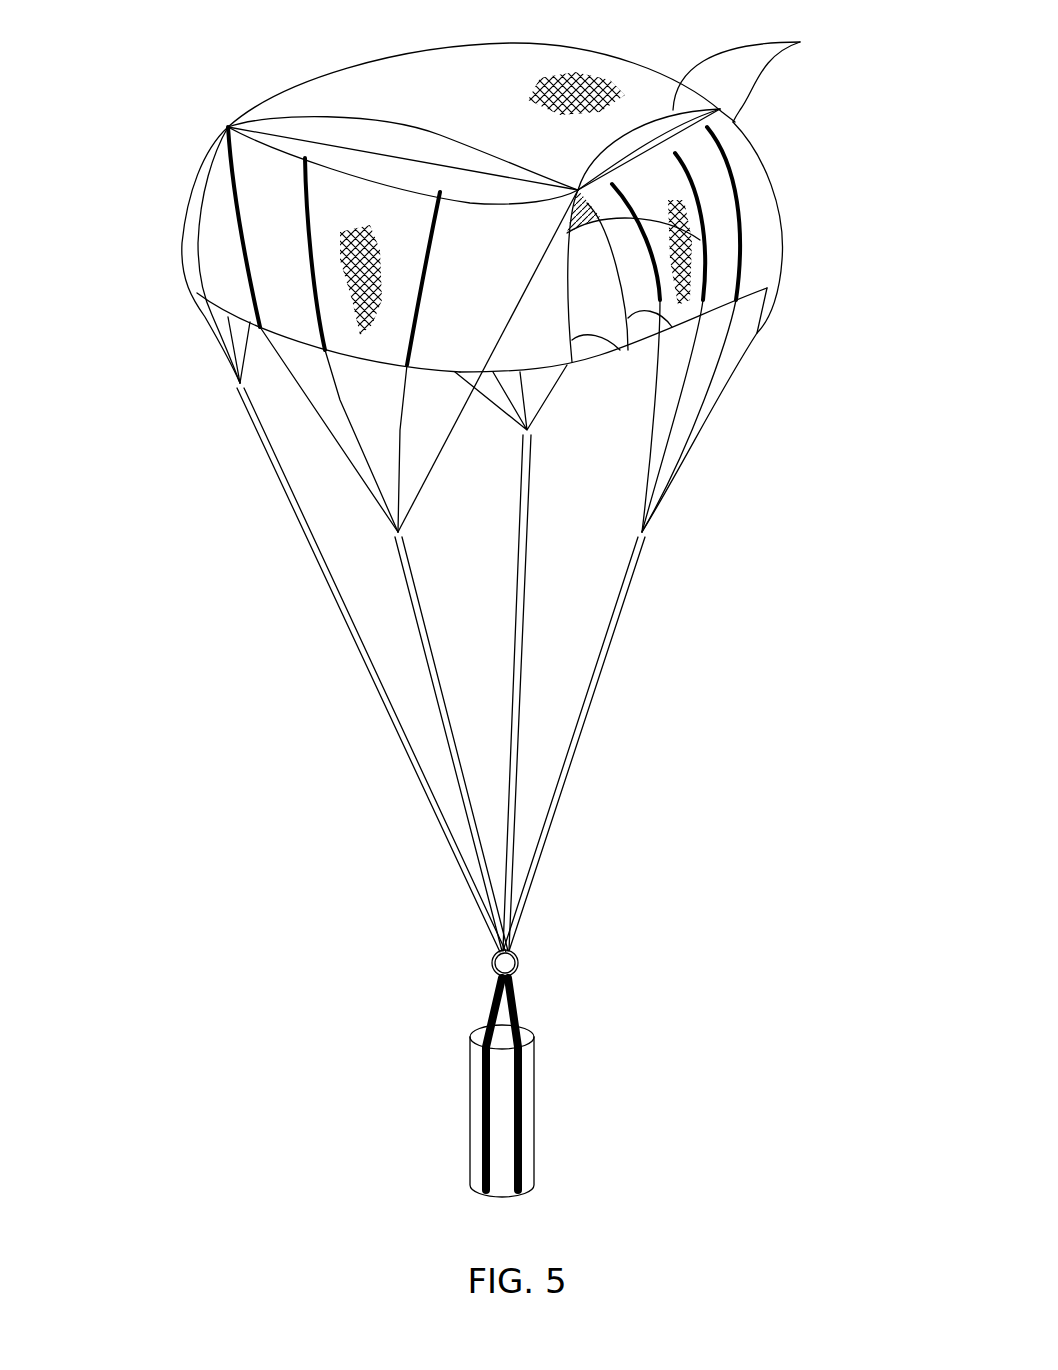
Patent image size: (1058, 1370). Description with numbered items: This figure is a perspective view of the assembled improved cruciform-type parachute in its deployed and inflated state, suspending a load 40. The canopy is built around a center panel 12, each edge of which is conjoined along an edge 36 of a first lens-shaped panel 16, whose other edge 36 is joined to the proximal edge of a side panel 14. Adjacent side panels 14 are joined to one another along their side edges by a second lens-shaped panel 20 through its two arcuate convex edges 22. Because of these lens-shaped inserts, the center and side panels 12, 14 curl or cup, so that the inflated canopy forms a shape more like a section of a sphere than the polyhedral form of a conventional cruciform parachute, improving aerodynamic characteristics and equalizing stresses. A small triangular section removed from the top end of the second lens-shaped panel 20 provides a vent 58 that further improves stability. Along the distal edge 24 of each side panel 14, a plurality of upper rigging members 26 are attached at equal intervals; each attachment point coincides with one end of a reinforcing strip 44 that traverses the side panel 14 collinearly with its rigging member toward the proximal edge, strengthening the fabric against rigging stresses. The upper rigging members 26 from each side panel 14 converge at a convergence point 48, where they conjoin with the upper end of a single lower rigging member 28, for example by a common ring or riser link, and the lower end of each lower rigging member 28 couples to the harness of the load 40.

The center panel 12 is at (467, 72).
The side panel 14 is at (277, 248).
The first lens-shaped panel 16 is at (377, 138).
The second lens-shaped panel 20 is at (592, 270).
The convex edge 22 is at (620, 350).
The distal edge 24 is at (297, 340).
The upper rigging member 26 is at (400, 430).
The lower rigging member 28 is at (600, 677).
The edge of first lens-shaped panel 36 is at (800, 42).
The load 40 is at (503, 1105).
The reinforcing strip 44 is at (277, 248).
The convergence point 48 is at (398, 532).
The vent 58 is at (767, 288).